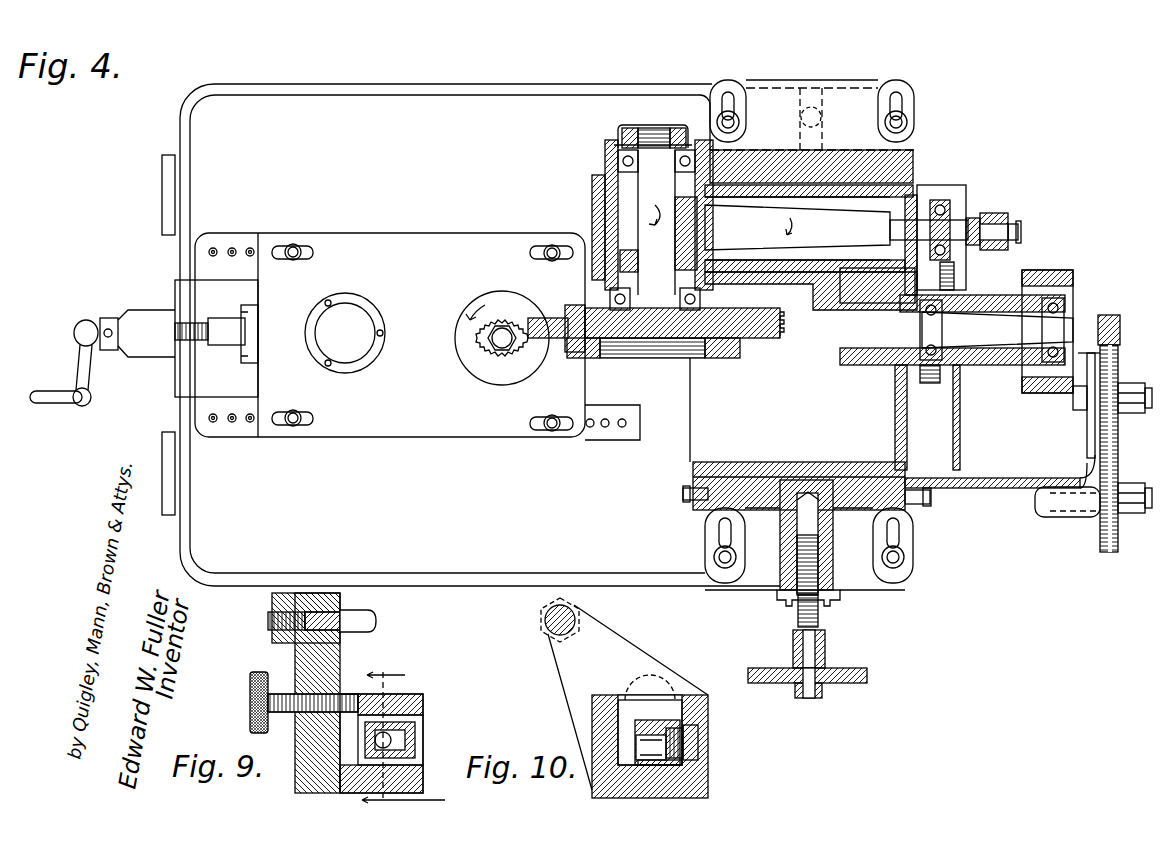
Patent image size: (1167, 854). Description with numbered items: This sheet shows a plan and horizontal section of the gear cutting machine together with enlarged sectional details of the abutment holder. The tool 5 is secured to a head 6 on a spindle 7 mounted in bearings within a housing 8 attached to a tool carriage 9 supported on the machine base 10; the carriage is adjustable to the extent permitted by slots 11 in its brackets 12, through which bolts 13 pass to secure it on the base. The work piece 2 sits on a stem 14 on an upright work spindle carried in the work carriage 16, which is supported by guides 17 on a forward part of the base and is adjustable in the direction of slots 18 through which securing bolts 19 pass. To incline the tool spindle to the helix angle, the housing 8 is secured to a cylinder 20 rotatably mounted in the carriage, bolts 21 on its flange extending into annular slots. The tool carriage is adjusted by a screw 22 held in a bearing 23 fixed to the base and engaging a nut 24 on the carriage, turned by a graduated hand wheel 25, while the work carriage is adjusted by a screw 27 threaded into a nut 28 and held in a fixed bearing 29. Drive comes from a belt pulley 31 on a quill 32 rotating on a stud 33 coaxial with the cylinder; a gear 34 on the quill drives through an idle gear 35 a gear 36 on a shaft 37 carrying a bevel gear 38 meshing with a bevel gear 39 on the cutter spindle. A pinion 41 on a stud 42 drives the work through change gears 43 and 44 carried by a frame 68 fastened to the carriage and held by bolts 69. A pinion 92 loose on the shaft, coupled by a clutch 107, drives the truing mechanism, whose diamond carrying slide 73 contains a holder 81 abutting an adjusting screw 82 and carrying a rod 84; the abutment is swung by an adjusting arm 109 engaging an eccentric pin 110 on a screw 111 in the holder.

In FIG. 4, the work piece 2 is at (500, 352).
In FIG. 4, the tool 5 is at (556, 340).
In FIG. 4, the head 6 is at (662, 346).
In FIG. 4, the spindle 7 is at (646, 218).
In FIG. 4, the housing 8 is at (604, 166).
In FIG. 4, the tool carriage 9 is at (835, 165).
In FIG. 4, the machine base 10 is at (608, 108).
In FIG. 9, the machine base 10 is at (410, 735).
In FIG. 4, the slots 11 is at (728, 100).
In FIG. 4, the brackets 12 is at (840, 105).
In FIG. 4, the bolts 13 is at (740, 124).
In FIG. 4, the stem 14 is at (495, 342).
In FIG. 4, the work carriage 16 is at (432, 243).
In FIG. 4, the guides 17 is at (235, 265).
In FIG. 4, the slots 18 is at (306, 244).
In FIG. 4, the securing bolts 19 is at (293, 246).
In FIG. 4, the cylinder 20 is at (705, 468).
In FIG. 4, the bolts 21 is at (690, 494).
In FIG. 4, the screw 22 is at (800, 616).
In FIG. 4, the bearing 23 is at (778, 596).
In FIG. 4, the nut 24 is at (800, 560).
In FIG. 4, the graduated hand wheel 25 is at (855, 672).
In FIG. 4, the screw 27 is at (196, 342).
In FIG. 4, the nut 28 is at (228, 342).
In FIG. 4, the fixed bearing 29 is at (118, 340).
In FIG. 4, the belt pulley 31 is at (1048, 270).
In FIG. 4, the quill 32 is at (985, 300).
In FIG. 4, the stud 33 is at (996, 330).
In FIG. 4, the gear 34 is at (930, 385).
In FIG. 4, the idle gear 35 is at (950, 275).
In FIG. 4, the gear 36 is at (935, 210).
In FIG. 4, the shaft 37 is at (836, 247).
In FIG. 4, the bevel gear 38 is at (684, 197).
In FIG. 4, the bevel gear 39 is at (626, 262).
In FIG. 4, the pinion 41 is at (1110, 316).
In FIG. 4, the stud 42 is at (1090, 350).
In FIG. 4, the change gear 43 is at (1105, 425).
In FIG. 4, the change gear 44 is at (1105, 488).
In FIG. 4, the frame 68 is at (1087, 430).
In FIG. 4, the bolts 69 is at (928, 500).
In FIG. 9, the slide 73 is at (405, 782).
In FIG. 10, the slide 73 is at (600, 786).
In FIG. 9, the holder 81 is at (415, 700).
In FIG. 10, the holder 81 is at (665, 702).
In FIG. 9, the adjusting screw 82 is at (270, 690).
In FIG. 10, the adjusting screw 82 is at (650, 695).
In FIG. 9, the rod 84 is at (362, 619).
In FIG. 10, the rod 84 is at (545, 622).
In FIG. 4, the pinion 92 is at (972, 222).
In FIG. 4, the clutch 107 is at (1004, 212).
In FIG. 9, the adjusting arm 109 is at (420, 742).
In FIG. 10, the adjusting arm 109 is at (700, 784).
In FIG. 9, the eccentric pin 110 is at (415, 722).
In FIG. 10, the eccentric pin 110 is at (640, 746).
In FIG. 10, the screw 111 is at (700, 742).